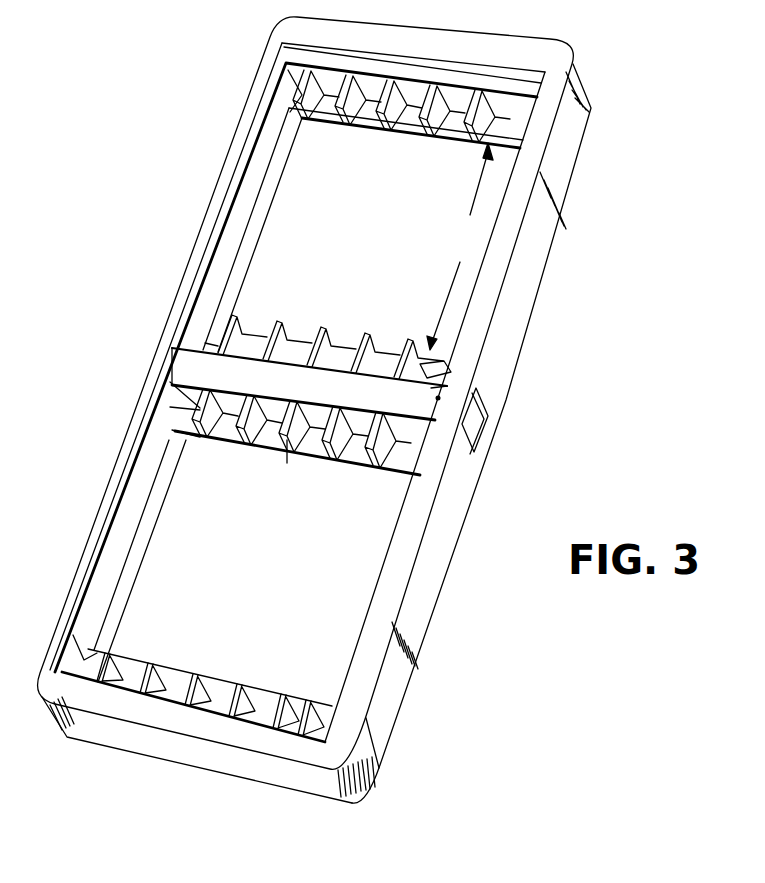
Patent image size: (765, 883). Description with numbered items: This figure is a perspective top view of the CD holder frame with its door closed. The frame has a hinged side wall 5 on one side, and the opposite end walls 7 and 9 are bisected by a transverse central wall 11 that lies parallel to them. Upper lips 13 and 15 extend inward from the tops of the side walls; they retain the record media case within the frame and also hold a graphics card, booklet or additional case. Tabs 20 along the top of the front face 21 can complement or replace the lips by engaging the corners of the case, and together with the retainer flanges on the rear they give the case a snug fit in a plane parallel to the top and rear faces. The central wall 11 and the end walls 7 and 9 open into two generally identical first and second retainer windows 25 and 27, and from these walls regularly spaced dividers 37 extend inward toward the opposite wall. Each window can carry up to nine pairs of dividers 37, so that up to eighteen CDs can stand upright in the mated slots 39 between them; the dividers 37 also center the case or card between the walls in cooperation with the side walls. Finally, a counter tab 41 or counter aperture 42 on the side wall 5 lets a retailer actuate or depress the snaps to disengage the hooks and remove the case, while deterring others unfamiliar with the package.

The hinged side wall 5 is at (430, 597).
The end wall 7 is at (200, 775).
The end wall 9 is at (481, 34).
The transverse central wall 11 is at (323, 390).
The upper lip 13 is at (424, 486).
The upper lip 15 is at (118, 474).
The tab 20 is at (450, 367).
The front face 21 is at (565, 0).
The first retainer window 25 is at (366, 237).
The second retainer window 27 is at (280, 573).
The divider 37 is at (327, 455).
The slot 39 is at (460, 246).
The counter tab 41 is at (438, 398).
The counter aperture 42 is at (477, 433).